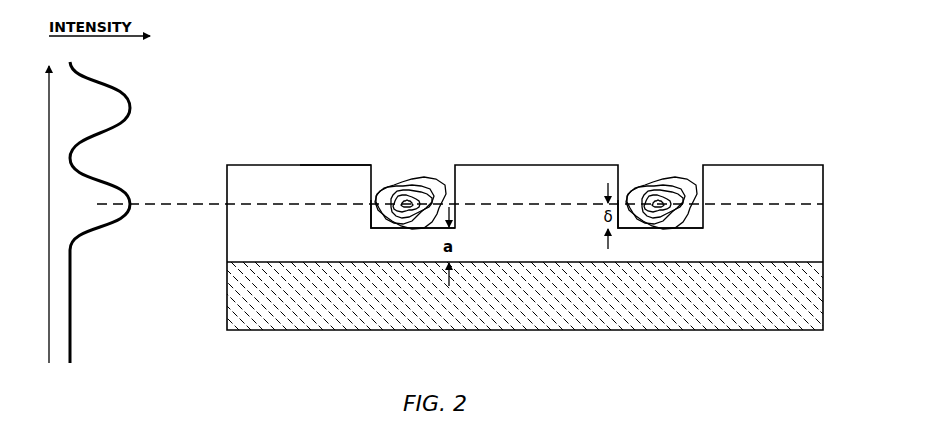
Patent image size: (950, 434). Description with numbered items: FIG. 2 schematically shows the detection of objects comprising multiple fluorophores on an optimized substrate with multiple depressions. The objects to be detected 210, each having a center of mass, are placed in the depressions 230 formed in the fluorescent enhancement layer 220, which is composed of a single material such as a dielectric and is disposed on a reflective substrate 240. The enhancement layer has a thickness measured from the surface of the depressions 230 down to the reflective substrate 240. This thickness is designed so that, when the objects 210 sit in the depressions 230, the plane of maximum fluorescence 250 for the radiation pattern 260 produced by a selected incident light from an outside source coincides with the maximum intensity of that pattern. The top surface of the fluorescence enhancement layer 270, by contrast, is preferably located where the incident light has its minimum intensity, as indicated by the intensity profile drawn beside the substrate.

The objects to be detected 210 is at (412, 187).
The fluorescent enhancement layer 220 is at (283, 171).
The depressions 230 is at (385, 232).
The reflective substrate 240 is at (286, 332).
The plane of maximum fluorescence 250 is at (553, 200).
The radiation pattern 260 is at (133, 108).
The top surface of the fluorescence enhancement layer 270 is at (330, 165).